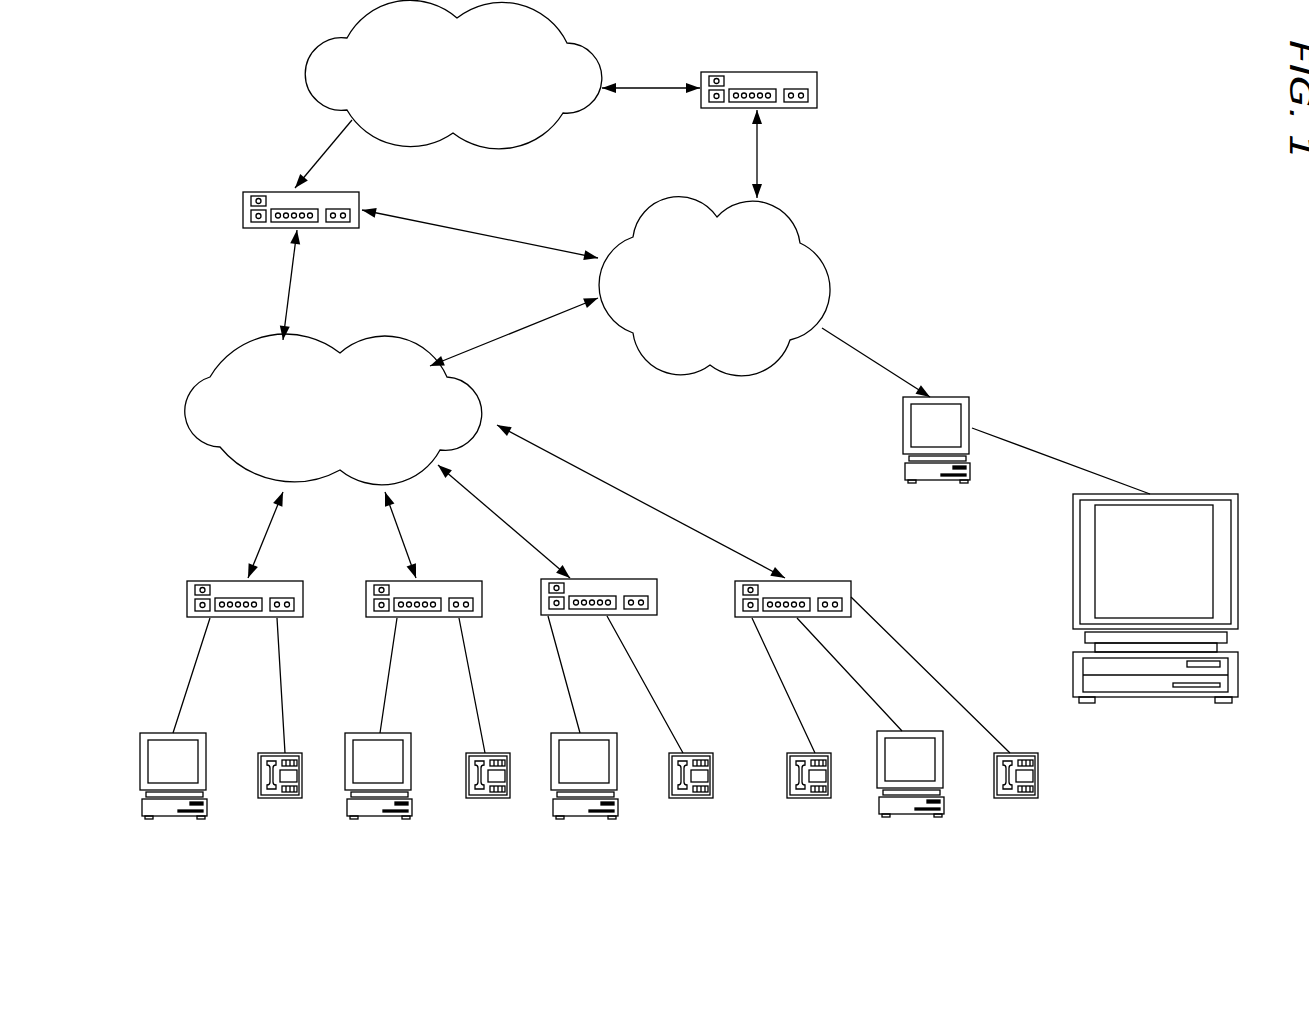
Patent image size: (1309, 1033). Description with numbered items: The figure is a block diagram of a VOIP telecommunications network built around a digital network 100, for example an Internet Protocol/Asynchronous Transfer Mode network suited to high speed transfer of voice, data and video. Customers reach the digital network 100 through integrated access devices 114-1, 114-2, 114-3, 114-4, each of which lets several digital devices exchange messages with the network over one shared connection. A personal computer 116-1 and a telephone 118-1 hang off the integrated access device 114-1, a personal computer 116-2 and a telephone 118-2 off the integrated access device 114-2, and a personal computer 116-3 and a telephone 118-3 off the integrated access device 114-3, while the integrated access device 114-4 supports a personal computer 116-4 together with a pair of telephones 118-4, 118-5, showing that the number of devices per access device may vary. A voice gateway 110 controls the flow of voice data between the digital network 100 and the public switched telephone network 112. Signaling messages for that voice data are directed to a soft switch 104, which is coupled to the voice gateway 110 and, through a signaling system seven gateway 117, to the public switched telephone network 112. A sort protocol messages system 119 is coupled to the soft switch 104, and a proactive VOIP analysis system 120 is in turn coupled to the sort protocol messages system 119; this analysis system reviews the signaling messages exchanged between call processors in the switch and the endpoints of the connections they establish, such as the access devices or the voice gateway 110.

The digital network 100 is at (187, 408).
The soft switch 104 is at (828, 280).
The voice gateway 110 is at (243, 210).
The public switched telephone network 112 is at (302, 72).
The integrated access device 114-1 is at (213, 580).
The integrated access device 114-2 is at (388, 580).
The integrated access device 114-3 is at (593, 578).
The integrated access device 114-4 is at (818, 578).
The personal computer 116-1 is at (165, 821).
The personal computer 116-2 is at (370, 821).
The personal computer 116-3 is at (576, 821).
The personal computer 116-4 is at (902, 820).
The signaling system 7 gateway 117 is at (818, 92).
The telephone 118-1 is at (277, 799).
The telephone 118-2 is at (485, 799).
The telephone 118-3 is at (688, 799).
The telephone 118-4 is at (806, 799).
The telephone 118-5 is at (1013, 799).
The sort protocol messages system 119 is at (903, 437).
The proactive VOIP analysis system 120 is at (1073, 568).